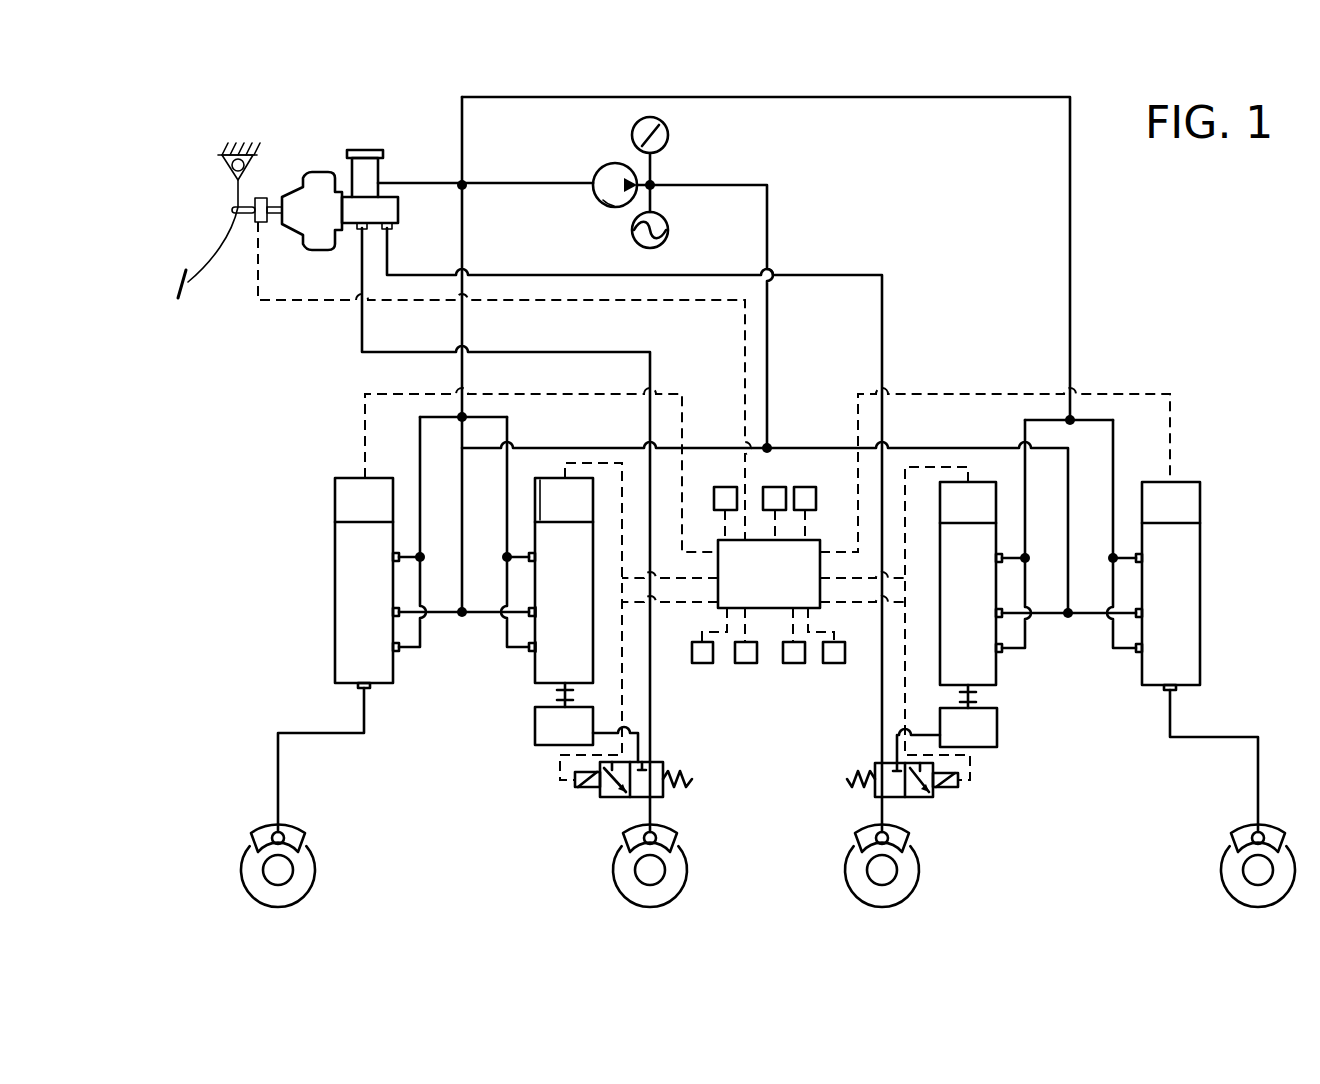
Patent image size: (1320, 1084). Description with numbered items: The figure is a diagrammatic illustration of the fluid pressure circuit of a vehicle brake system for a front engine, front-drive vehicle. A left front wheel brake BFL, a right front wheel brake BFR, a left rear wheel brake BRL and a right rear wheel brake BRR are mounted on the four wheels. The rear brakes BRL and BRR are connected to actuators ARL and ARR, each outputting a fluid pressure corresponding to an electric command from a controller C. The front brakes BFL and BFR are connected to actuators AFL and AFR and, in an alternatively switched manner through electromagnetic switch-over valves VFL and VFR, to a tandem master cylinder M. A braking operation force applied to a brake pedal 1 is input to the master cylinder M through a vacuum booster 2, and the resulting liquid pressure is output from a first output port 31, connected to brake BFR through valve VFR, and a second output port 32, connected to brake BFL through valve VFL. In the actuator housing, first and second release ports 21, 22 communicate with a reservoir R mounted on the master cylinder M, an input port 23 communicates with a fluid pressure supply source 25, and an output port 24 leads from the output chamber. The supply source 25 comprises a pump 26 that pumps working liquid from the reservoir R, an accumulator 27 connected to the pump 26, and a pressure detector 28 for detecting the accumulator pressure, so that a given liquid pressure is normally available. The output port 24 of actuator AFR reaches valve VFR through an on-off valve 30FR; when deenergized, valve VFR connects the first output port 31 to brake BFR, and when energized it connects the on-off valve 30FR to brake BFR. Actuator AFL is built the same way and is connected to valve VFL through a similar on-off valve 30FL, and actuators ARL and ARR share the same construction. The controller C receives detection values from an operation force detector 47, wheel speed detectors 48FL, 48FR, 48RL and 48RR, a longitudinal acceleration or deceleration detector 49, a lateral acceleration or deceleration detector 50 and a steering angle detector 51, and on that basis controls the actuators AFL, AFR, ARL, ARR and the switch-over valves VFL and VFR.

The brake pedal 1 is at (190, 278).
The vacuum booster 2 is at (315, 185).
The operation force detector 47 is at (256, 224).
The master cylinder M is at (400, 208).
The reservoir R is at (378, 173).
The first output port 31 is at (362, 230).
The second output port 32 is at (390, 232).
The fluid pressure supply source 25 is at (596, 166).
The pump 26 is at (602, 202).
The accumulator 27 is at (668, 230).
The pressure detector 28 is at (668, 135).
The actuator ARL is at (372, 603).
The actuator AFR is at (575, 610).
The actuator AFL is at (978, 610).
The actuator ARR is at (1182, 612).
The first release port 21 is at (531, 652).
The second release port 22 is at (531, 555).
The input port 23 is at (531, 620).
The output port 24 is at (557, 698).
The on-off valve 30FR is at (556, 732).
The on-off valve 30FL is at (998, 737).
The controller C is at (780, 601).
The longitudinal acceleration or deceleration detector 49 is at (725, 486).
The lateral acceleration or deceleration detector 50 is at (778, 486).
The steering angle detector 51 is at (806, 486).
The wheel speed detector 48FL is at (702, 664).
The wheel speed detector 48FR is at (746, 664).
The wheel speed detector 48RL is at (794, 664).
The wheel speed detector 48RR is at (834, 664).
The electromagnetic switch-over valve VFR is at (658, 762).
The electromagnetic switch-over valve VFL is at (928, 798).
The left rear wheel brake BRL is at (300, 833).
The right front wheel brake BFR is at (678, 829).
The left front wheel brake BFL is at (860, 838).
The right rear wheel brake BRR is at (1238, 835).